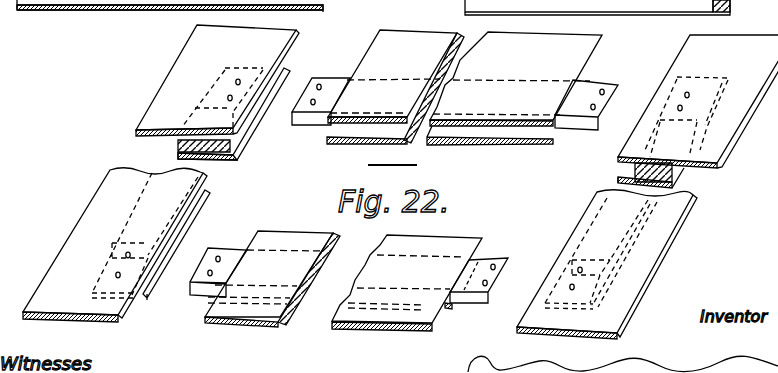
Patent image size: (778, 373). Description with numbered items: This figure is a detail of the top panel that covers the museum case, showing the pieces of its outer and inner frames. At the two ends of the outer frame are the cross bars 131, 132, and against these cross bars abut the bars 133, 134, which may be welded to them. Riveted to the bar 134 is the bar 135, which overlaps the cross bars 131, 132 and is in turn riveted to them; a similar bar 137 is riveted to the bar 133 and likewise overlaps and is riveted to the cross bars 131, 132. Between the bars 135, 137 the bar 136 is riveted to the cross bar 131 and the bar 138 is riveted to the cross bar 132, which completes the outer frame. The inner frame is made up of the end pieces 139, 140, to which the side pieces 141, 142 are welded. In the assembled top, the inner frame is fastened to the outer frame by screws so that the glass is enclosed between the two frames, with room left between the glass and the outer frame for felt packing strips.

The cross bar 131 is at (180, 75).
The cross bar 132 is at (627, 138).
The bar 133 is at (230, 323).
The bar 134 is at (398, 40).
The bar 135 is at (328, 82).
The bar 136 is at (178, 145).
The bar 137 is at (218, 258).
The bar 138 is at (677, 170).
The end piece 139 is at (255, 121).
The end piece 140 is at (620, 177).
The side piece 141 is at (343, 135).
The side piece 142 is at (328, 267).